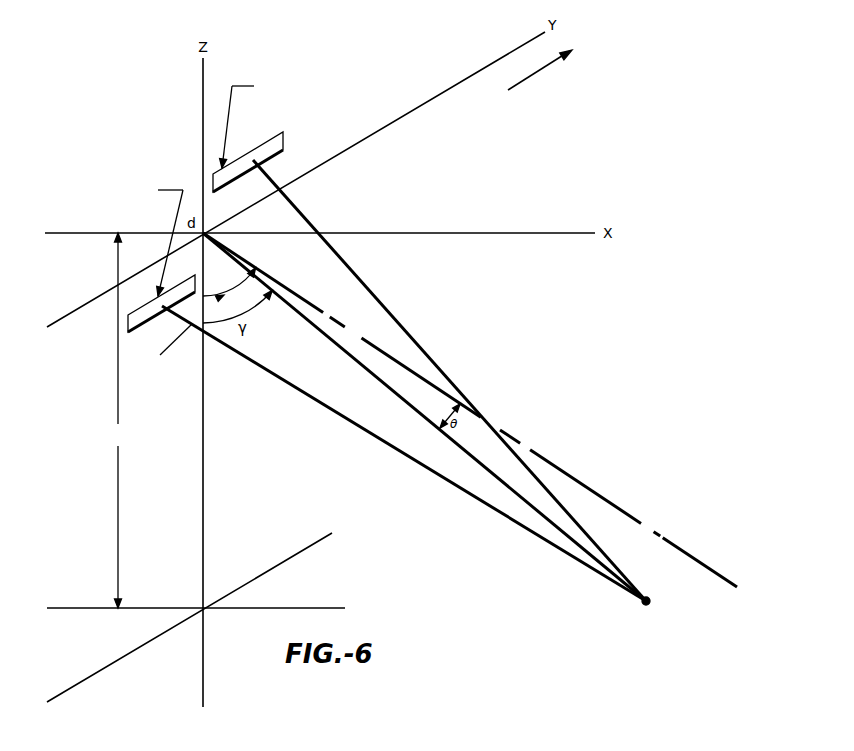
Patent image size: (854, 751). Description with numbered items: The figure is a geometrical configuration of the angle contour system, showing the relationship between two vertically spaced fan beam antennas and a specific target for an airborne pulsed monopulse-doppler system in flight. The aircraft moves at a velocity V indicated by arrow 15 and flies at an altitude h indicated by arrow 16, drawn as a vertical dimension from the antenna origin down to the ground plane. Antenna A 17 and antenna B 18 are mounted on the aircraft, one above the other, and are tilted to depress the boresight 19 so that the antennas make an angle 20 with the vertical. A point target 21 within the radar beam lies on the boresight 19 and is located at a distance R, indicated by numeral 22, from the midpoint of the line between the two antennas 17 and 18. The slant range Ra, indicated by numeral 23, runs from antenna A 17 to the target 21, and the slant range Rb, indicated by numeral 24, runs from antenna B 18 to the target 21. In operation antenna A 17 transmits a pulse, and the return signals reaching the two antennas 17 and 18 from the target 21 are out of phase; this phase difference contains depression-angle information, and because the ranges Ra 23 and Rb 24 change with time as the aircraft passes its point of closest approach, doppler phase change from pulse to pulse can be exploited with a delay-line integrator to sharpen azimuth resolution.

The arrow indicating velocity V 15 is at (540, 72).
The arrow indicating altitude h 16 is at (108, 438).
The antenna A 17 is at (313, 74).
The antenna B 18 is at (110, 179).
The boresight 19 is at (680, 503).
The angle with the vertical 20 is at (166, 347).
The point target 21 is at (642, 604).
The distance R 22 is at (433, 395).
The slant range Ra 23 is at (446, 330).
The slant range Rb 24 is at (363, 462).